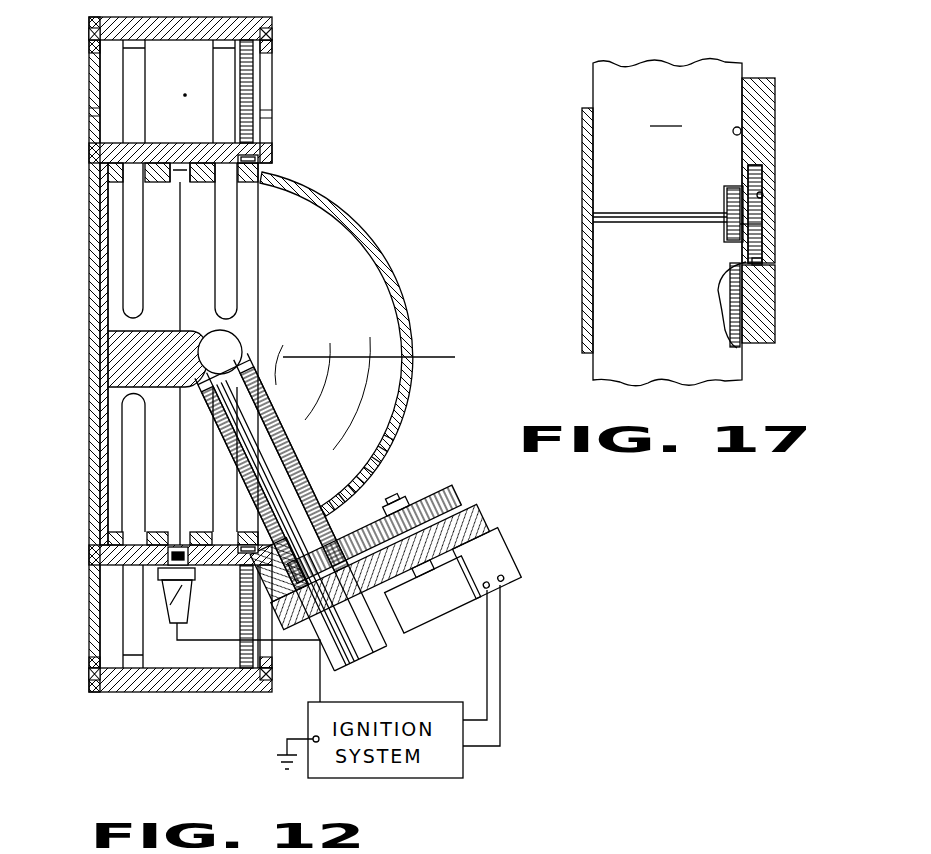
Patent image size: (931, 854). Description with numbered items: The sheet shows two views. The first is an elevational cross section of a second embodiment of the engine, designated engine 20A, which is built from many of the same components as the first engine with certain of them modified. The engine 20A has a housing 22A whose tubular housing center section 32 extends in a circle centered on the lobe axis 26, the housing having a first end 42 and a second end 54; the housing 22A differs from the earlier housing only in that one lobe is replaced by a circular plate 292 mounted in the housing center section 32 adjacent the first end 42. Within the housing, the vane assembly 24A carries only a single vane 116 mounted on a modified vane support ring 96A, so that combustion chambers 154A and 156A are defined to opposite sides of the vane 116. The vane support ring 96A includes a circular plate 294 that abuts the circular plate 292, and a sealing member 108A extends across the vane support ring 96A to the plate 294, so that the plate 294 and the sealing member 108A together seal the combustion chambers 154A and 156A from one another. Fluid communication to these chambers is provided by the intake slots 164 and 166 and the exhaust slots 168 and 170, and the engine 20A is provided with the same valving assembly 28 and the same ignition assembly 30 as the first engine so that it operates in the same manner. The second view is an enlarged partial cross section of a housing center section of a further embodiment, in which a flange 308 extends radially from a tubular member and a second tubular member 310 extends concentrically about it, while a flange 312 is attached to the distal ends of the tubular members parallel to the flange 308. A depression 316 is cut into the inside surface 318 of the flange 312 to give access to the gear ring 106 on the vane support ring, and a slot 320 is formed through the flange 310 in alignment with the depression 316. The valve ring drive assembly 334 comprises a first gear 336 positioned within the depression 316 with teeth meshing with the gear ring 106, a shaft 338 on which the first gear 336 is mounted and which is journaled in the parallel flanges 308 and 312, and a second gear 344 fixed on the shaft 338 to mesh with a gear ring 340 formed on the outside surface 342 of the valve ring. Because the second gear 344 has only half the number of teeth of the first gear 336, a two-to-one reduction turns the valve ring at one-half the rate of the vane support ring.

In FIG. 12, the valving assembly 28 is at (276, 20).
In FIG. 12, the housing center section 32 is at (218, 150).
In FIG. 12, the engine 20A is at (345, 130).
In FIG. 12, the first end 42 is at (87, 150).
In FIG. 12, the second end 54 is at (276, 150).
In FIG. 12, the vane assembly 24A is at (268, 210).
In FIG. 12, the exhaust slot 170 is at (130, 222).
In FIG. 12, the housing 22A is at (367, 222).
In FIG. 12, the vane support ring 96A is at (255, 252).
In FIG. 12, the intake slot 166 is at (235, 270).
In FIG. 12, the combustion chamber 156A is at (150, 282).
In FIG. 12, the sealing member 108A is at (196, 343).
In FIG. 12, the circular plate 294 is at (100, 318).
In FIG. 12, the lobe axis 26 is at (455, 357).
In FIG. 12, the circular plate 292 is at (100, 398).
In FIG. 12, the vane 116 is at (291, 511).
In FIG. 12, the exhaust slot 168 is at (134, 436).
In FIG. 12, the intake slot 164 is at (232, 480).
In FIG. 12, the combustion chamber 154A is at (153, 483).
In FIG. 12, the ignition assembly 30 is at (384, 567).
In FIG. 17, the flange 308 is at (585, 165).
In FIG. 17, the second tubular member 310 is at (667, 222).
In FIG. 17, the flange 312 is at (770, 113).
In FIG. 17, the inside surface 318 is at (742, 137).
In FIG. 17, the slot 320 is at (735, 188).
In FIG. 17, the first gear 336 is at (763, 172).
In FIG. 17, the shaft 338 is at (643, 215).
In FIG. 17, the depression 316 is at (758, 197).
In FIG. 17, the valve ring drive assembly 334 is at (760, 225).
In FIG. 17, the second gear 344 is at (730, 238).
In FIG. 17, the gear ring 106 is at (762, 263).
In FIG. 17, the outside surface 342 is at (722, 290).
In FIG. 17, the gear ring 340 is at (733, 318).